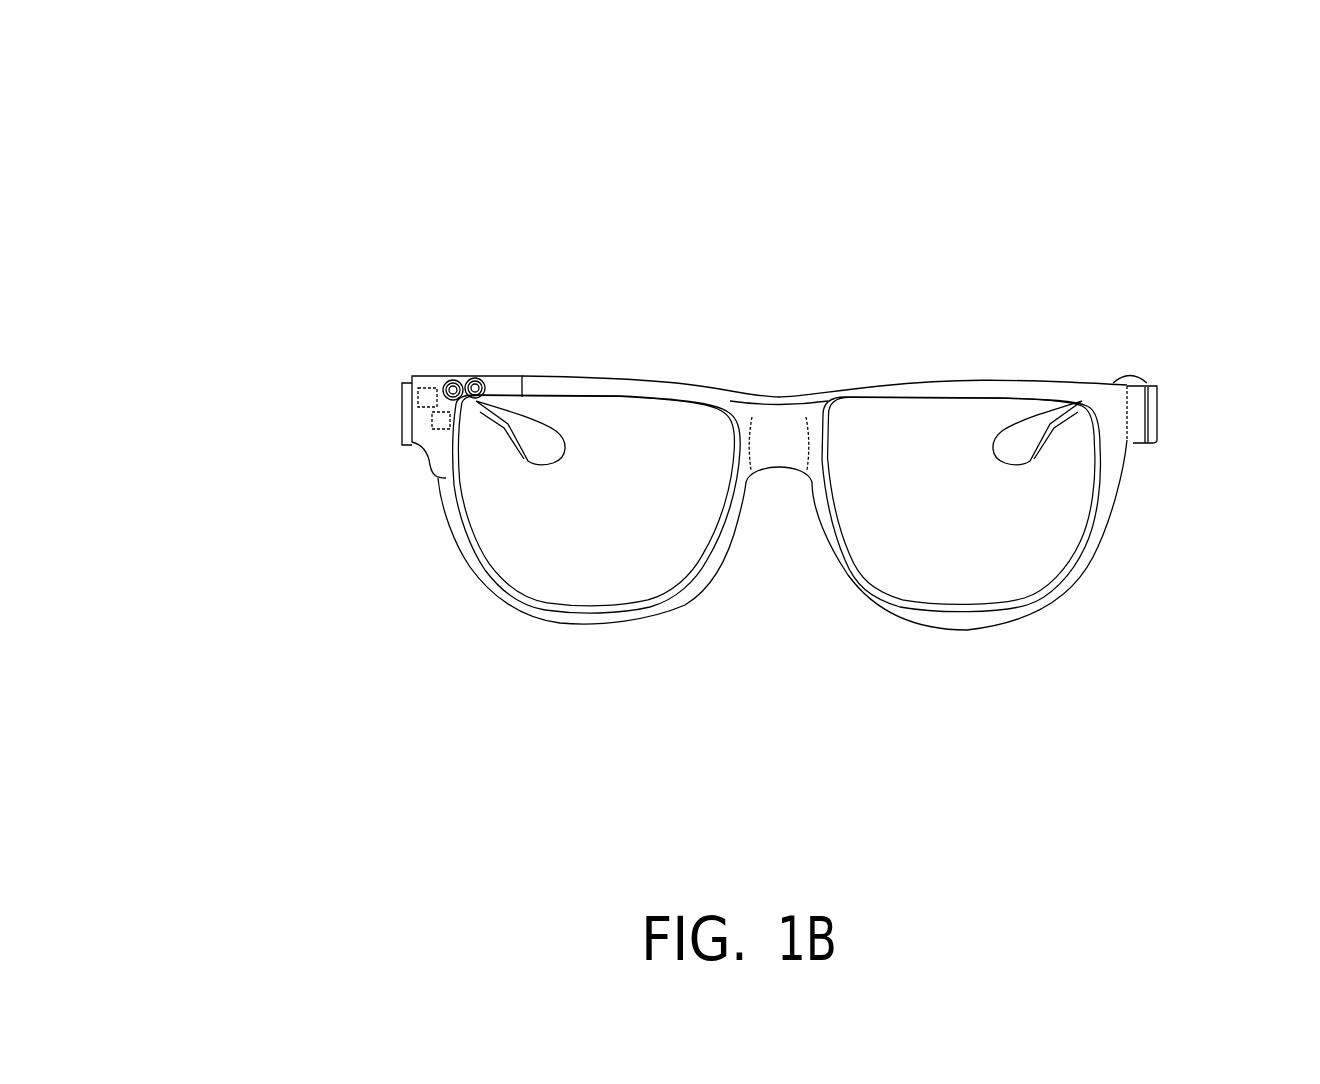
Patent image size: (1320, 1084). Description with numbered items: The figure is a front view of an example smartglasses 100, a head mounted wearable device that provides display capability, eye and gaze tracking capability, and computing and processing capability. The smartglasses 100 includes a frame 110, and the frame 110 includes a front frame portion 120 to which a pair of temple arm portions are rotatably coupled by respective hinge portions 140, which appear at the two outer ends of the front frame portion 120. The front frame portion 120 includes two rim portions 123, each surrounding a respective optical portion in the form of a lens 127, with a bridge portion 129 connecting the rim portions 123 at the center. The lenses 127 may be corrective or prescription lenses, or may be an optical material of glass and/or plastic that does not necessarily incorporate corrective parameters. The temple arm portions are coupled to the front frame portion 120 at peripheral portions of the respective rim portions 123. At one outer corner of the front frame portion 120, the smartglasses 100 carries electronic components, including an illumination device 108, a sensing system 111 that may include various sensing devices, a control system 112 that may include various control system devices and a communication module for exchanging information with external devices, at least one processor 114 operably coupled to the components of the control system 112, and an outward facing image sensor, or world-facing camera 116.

The smartglasses 100 is at (214, 90).
The illumination device 108 is at (493, 378).
The frame 110 is at (1146, 459).
The sensing system 111 is at (431, 428).
The control system 112 is at (432, 380).
The processor 114 is at (418, 386).
The world-facing camera 116 is at (457, 380).
The front frame portion 120 is at (1026, 368).
The rim portions 123 is at (503, 603).
The lenses 127 is at (572, 573).
The bridge portion 129 is at (775, 420).
The hinge portions 140 is at (397, 388).